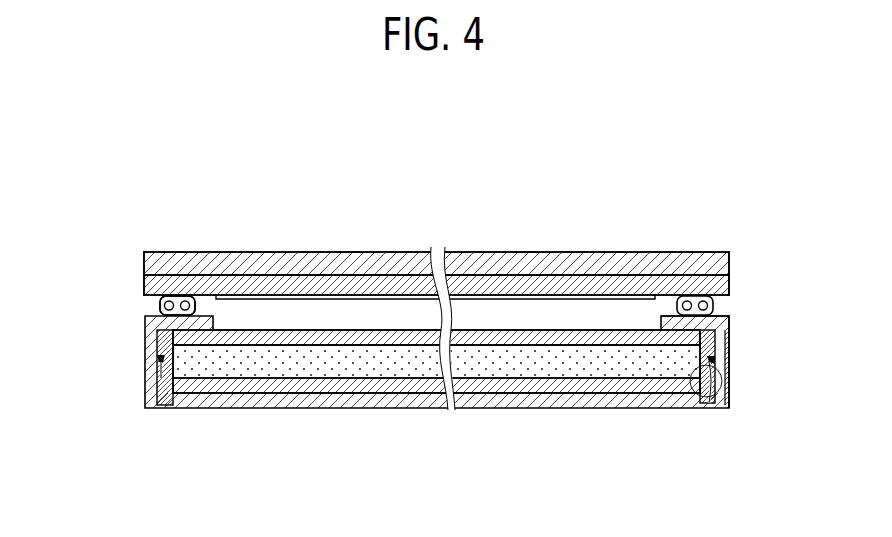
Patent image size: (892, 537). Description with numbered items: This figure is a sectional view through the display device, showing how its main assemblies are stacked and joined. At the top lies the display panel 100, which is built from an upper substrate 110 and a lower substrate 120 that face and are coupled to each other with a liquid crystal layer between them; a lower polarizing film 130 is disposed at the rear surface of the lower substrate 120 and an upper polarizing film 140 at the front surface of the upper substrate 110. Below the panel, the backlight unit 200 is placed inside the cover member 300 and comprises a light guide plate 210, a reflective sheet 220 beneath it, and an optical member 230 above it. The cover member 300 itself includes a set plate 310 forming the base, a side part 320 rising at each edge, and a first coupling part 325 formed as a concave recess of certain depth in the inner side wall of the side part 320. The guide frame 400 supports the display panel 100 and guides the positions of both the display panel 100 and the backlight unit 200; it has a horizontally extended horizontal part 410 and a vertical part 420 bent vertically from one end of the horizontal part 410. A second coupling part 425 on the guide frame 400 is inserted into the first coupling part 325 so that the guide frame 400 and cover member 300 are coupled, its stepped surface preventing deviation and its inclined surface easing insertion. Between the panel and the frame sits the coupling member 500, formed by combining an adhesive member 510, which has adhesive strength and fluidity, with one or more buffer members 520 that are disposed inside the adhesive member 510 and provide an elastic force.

The display panel 100 is at (630, 203).
The upper substrate 110 is at (528, 274).
The lower substrate 120 is at (583, 292).
The lower polarizing film 130 is at (630, 296).
The upper polarizing film 140 is at (484, 252).
The backlight unit 200 is at (362, 452).
The light guide plate 210 is at (317, 363).
The reflective sheet 220 is at (356, 385).
The optical member 230 is at (265, 338).
The cover member 300 is at (740, 466).
The set plate 310 is at (643, 402).
The side part 320 is at (700, 383).
The first coupling part 325 is at (718, 408).
The guide frame 400 is at (794, 308).
The horizontal part 410 is at (708, 324).
The vertical part 420 is at (722, 340).
The second coupling part 425 is at (712, 358).
The coupling member 500 is at (72, 283).
The adhesive member 510 is at (157, 302).
The buffer member 520 is at (157, 310).